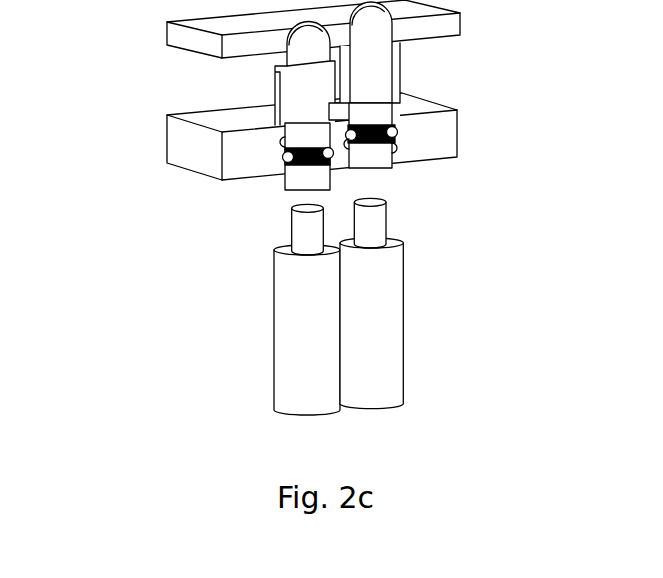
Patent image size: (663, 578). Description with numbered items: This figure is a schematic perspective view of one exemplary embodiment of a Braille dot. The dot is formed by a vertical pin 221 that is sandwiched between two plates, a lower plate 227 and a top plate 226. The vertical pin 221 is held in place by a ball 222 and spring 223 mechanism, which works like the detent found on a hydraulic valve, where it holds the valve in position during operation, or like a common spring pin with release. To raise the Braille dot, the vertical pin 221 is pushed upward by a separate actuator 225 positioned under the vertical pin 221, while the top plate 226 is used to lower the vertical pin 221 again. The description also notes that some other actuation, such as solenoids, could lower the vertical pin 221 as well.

The vertical pin 221 is at (402, 62).
The ball 222 is at (280, 162).
The spring 223 is at (378, 143).
The actuator 225 is at (272, 368).
The top plate 226 is at (176, 50).
The plate 227 is at (165, 146).